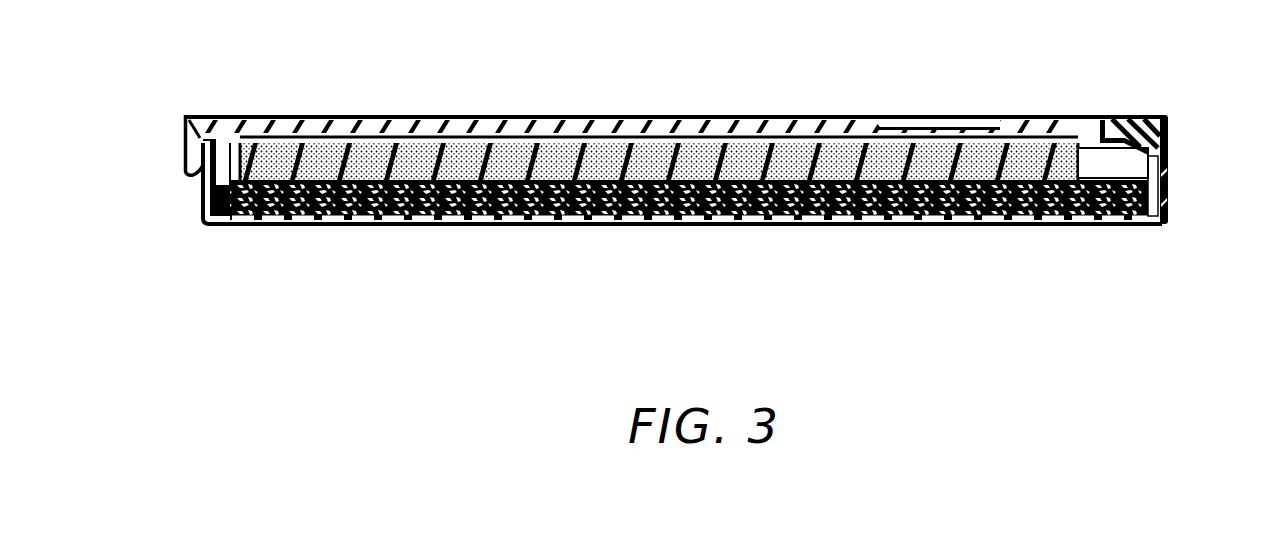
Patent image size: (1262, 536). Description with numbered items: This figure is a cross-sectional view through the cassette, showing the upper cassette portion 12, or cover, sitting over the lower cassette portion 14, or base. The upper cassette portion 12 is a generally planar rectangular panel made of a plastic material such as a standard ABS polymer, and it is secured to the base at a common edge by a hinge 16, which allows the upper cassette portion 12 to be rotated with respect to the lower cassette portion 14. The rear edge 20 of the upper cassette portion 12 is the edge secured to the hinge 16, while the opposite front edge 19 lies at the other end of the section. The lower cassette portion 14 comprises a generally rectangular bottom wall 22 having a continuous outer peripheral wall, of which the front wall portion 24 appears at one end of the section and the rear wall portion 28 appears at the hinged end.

The upper cassette portion 12 is at (370, 117).
The lower cassette portion 14 is at (362, 228).
The hinge 16 is at (185, 134).
The front edge 19 is at (1165, 116).
The rear edge 20 is at (250, 119).
The bottom wall 22 is at (562, 223).
The front wall portion 24 is at (1168, 148).
The rear wall portion 28 is at (197, 187).